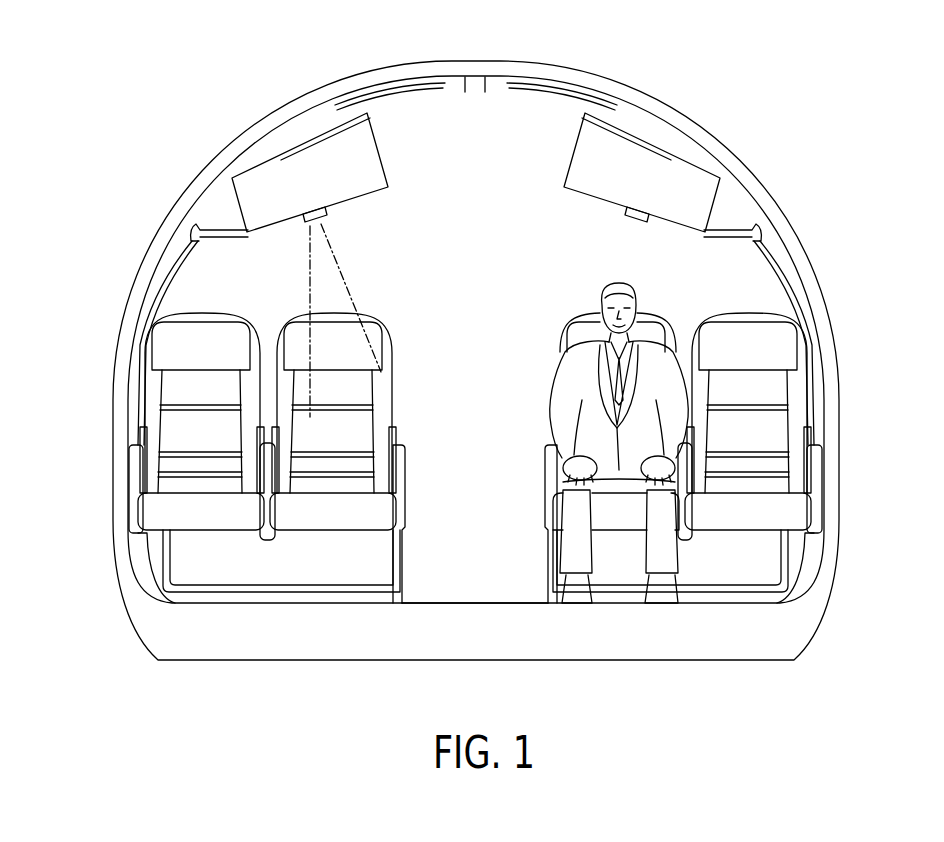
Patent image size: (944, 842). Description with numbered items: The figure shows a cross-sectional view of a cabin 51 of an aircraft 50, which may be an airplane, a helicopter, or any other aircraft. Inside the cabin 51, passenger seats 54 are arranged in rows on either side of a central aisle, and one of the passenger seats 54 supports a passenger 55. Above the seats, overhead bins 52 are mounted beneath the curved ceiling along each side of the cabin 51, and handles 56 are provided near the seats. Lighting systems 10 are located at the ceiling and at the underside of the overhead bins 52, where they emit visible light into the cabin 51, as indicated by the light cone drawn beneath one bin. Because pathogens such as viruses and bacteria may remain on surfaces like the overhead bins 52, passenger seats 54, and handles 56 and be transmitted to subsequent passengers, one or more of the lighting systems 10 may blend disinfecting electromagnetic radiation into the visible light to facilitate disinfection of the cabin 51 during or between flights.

The lighting system 10 is at (458, 92).
The aircraft 50 is at (131, 77).
The cabin 51 is at (499, 510).
The overhead bin 52 is at (263, 194).
The passenger seat 54 is at (358, 393).
The passenger 55 is at (700, 290).
The handle 56 is at (408, 457).